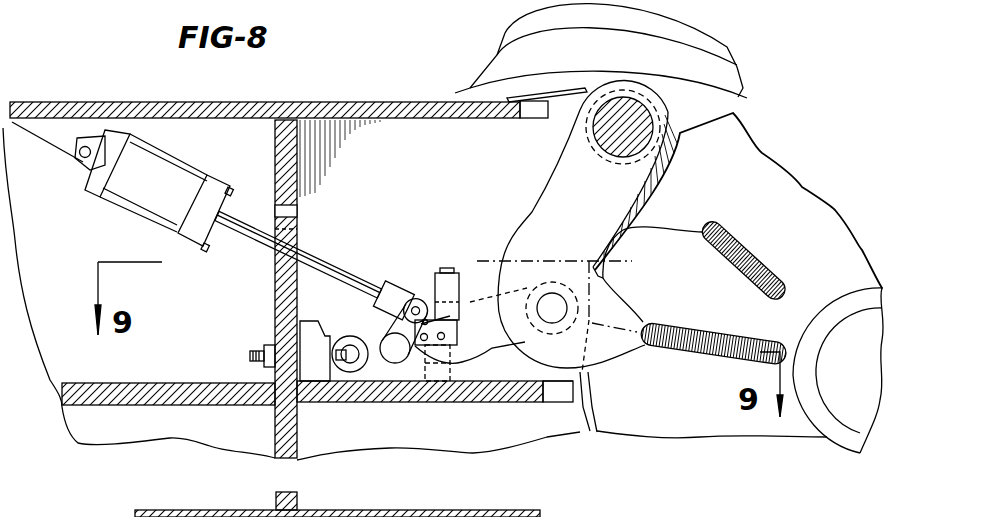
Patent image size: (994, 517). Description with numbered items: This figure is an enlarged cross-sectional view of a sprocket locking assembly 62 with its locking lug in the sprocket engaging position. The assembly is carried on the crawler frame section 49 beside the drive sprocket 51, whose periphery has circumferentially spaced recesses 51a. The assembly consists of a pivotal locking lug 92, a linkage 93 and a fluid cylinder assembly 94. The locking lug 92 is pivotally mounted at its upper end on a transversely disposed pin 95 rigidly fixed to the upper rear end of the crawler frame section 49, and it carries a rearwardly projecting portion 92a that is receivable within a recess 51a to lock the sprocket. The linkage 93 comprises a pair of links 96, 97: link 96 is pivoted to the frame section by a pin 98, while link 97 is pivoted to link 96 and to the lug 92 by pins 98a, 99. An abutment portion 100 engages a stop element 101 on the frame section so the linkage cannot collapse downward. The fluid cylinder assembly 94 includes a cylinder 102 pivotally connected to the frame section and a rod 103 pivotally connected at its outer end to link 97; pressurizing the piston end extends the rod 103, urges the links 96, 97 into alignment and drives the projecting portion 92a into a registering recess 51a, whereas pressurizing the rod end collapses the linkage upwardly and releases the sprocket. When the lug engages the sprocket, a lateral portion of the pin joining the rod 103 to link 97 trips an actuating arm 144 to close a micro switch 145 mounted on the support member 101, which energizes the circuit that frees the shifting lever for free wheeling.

The crawler frame section 49 is at (202, 103).
The drive sprocket 51 is at (735, 420).
The recess 51a is at (698, 170).
The sprocket locking assembly 62 is at (500, 228).
The locking lug 92 is at (560, 197).
The rearwardly projecting portion 92a is at (608, 355).
The linkage 93 is at (407, 287).
The fluid cylinder assembly 94 is at (220, 142).
The pin 95 is at (608, 133).
The link 96 is at (373, 332).
The link 97 is at (497, 344).
The pin 98 is at (352, 372).
The pin 98a is at (397, 362).
The pin 99 is at (552, 294).
The abutment portion 100 is at (465, 362).
The stop element 101 is at (437, 375).
The cylinder 102 is at (128, 210).
The rod 103 is at (310, 255).
The actuating arm 144 is at (443, 323).
The micro switch 145 is at (443, 268).